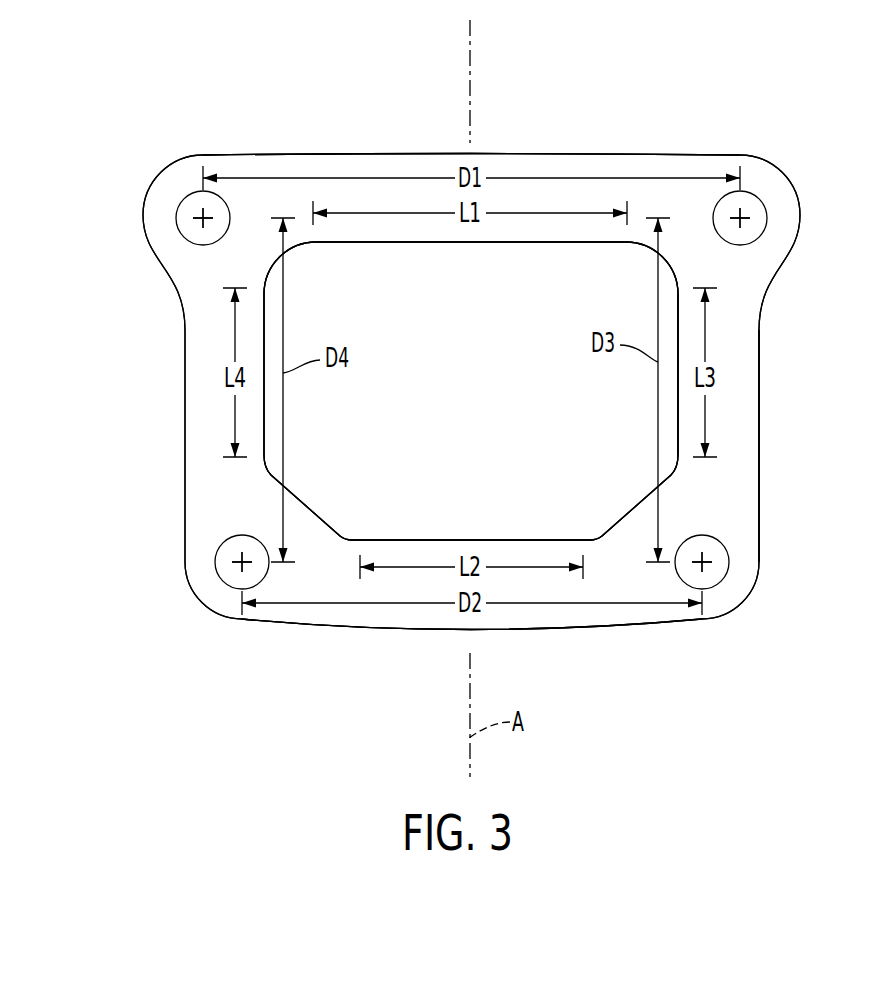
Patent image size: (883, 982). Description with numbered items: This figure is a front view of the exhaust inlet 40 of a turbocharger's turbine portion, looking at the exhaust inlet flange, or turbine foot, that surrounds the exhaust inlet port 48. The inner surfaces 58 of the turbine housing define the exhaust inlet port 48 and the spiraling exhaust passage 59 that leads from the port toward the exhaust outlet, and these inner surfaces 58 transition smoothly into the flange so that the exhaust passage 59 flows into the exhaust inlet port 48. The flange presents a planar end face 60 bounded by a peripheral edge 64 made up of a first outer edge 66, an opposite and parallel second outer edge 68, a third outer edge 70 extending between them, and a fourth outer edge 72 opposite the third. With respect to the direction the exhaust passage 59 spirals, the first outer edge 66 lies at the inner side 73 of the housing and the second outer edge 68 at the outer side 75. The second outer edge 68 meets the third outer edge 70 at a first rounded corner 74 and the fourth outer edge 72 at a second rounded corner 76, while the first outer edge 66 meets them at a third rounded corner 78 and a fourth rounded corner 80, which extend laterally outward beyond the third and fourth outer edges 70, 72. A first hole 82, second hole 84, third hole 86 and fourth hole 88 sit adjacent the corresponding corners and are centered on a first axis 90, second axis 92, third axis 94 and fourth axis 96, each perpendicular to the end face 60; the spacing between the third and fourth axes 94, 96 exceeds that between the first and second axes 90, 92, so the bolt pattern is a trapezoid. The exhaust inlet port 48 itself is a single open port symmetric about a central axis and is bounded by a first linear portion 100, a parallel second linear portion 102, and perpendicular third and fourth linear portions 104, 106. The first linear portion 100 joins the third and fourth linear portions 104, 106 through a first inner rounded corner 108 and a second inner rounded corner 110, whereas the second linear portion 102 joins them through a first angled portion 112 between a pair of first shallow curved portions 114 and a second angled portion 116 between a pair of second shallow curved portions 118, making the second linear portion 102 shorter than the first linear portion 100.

The exhaust inlet 40 is at (417, 283).
The exhaust inlet port 48 is at (417, 541).
The inner surfaces 58 is at (633, 383).
The exhaust passage 59 is at (424, 392).
The end face 60 is at (728, 460).
The peripheral edge 64 is at (761, 418).
The first outer edge 66 is at (657, 153).
The second outer edge 68 is at (578, 628).
The third outer edge 70 is at (759, 342).
The fourth outer edge 72 is at (185, 410).
The inner side 73 is at (246, 132).
The first rounded corner 74 is at (745, 603).
The outer side 75 is at (270, 637).
The second rounded corner 76 is at (205, 607).
The third rounded corner 78 is at (787, 178).
The fourth rounded corner 80 is at (148, 197).
The first hole 82 is at (728, 550).
The second hole 84 is at (215, 552).
The third hole 86 is at (767, 218).
The fourth hole 88 is at (197, 243).
The first axis 90 is at (702, 562).
The second axis 92 is at (242, 562).
The third axis 94 is at (740, 218).
The fourth axis 96 is at (203, 218).
The first linear portion 100 is at (487, 242).
The second linear portion 102 is at (490, 540).
The third linear portion 104 is at (678, 425).
The fourth linear portion 106 is at (264, 333).
The first inner rounded corner 108 is at (672, 278).
The second inner rounded corner 110 is at (292, 250).
The first angled portion 112 is at (650, 498).
The first shallow curved portions 114 is at (676, 458).
The second angled portion 116 is at (302, 502).
The second shallow curved portions 118 is at (266, 460).